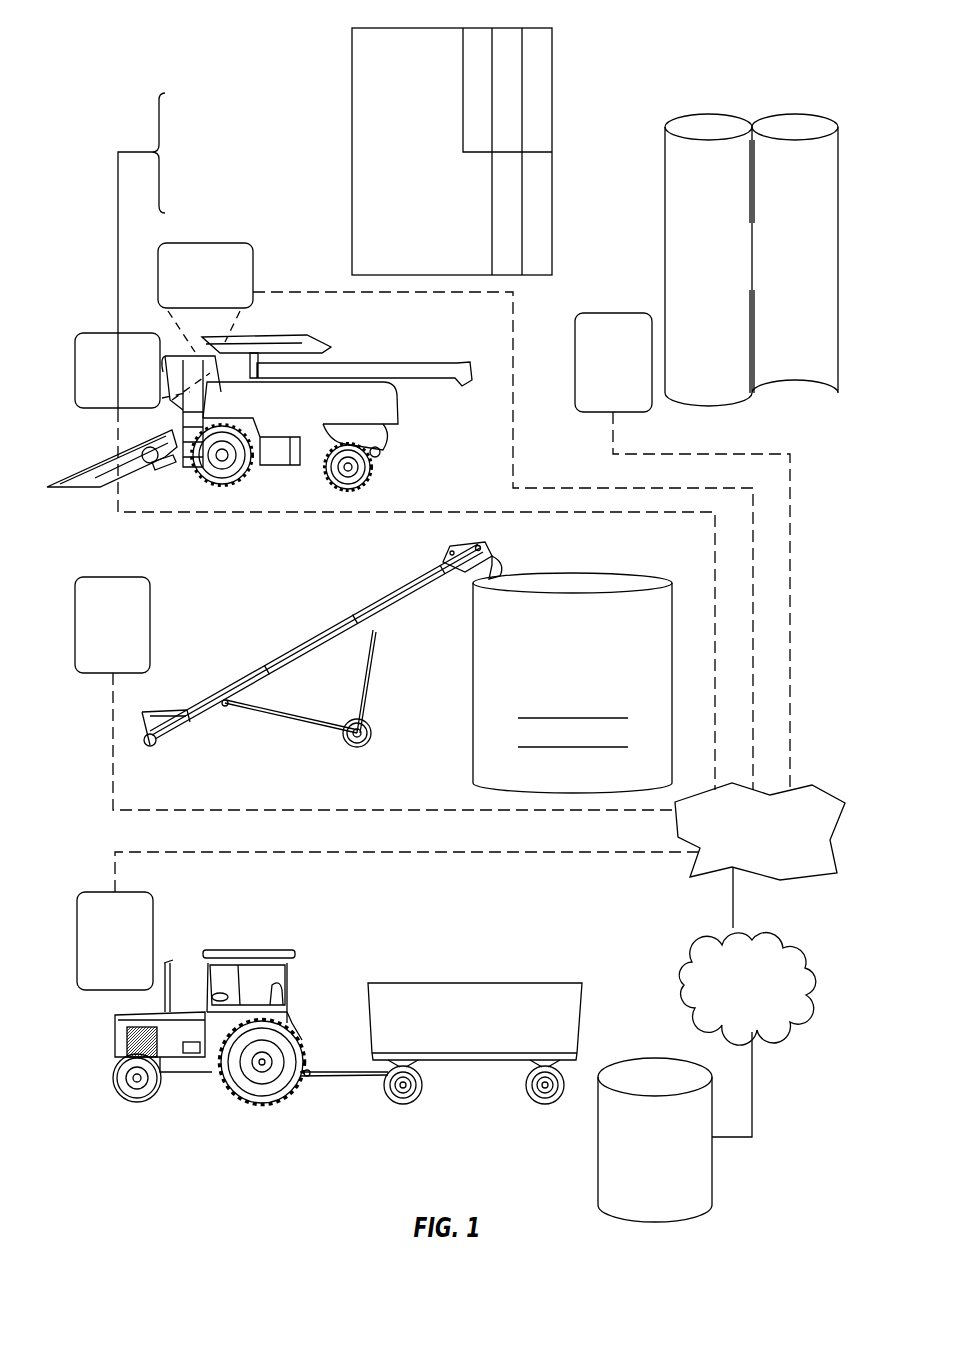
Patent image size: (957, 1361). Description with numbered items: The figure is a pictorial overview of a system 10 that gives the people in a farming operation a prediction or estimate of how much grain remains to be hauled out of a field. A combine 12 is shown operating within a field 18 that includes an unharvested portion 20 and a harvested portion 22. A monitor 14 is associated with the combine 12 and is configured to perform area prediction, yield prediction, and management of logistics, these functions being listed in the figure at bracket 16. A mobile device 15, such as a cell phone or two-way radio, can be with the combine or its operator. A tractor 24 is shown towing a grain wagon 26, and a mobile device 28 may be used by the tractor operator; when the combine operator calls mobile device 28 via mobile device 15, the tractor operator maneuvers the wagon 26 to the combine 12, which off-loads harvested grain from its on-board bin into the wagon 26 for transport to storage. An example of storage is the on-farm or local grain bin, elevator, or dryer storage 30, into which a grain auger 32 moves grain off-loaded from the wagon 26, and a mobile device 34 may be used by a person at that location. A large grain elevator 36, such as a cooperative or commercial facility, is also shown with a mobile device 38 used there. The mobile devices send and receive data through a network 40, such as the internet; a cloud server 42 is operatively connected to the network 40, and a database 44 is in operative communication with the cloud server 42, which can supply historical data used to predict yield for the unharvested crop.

The system 10 is at (187, 71).
The combine 12 is at (385, 395).
The monitor 14 is at (100, 333).
The mobile device 15 is at (227, 243).
The prediction and management functions 16 is at (159, 103).
The field 18 is at (352, 37).
The unharvested portion 20 is at (377, 248).
The harvested portion 22 is at (540, 198).
The tractor 24 is at (122, 1015).
The grain wagon 26 is at (393, 983).
The mobile device 28 is at (108, 892).
The grain bin or elevator storage 30 is at (553, 648).
The grain auger 32 is at (297, 650).
The mobile device 34 is at (108, 577).
The grain elevator 36 is at (693, 117).
The mobile device 38 is at (625, 313).
The network 40 is at (783, 868).
The cloud server 42 is at (688, 966).
The database 44 is at (655, 1068).